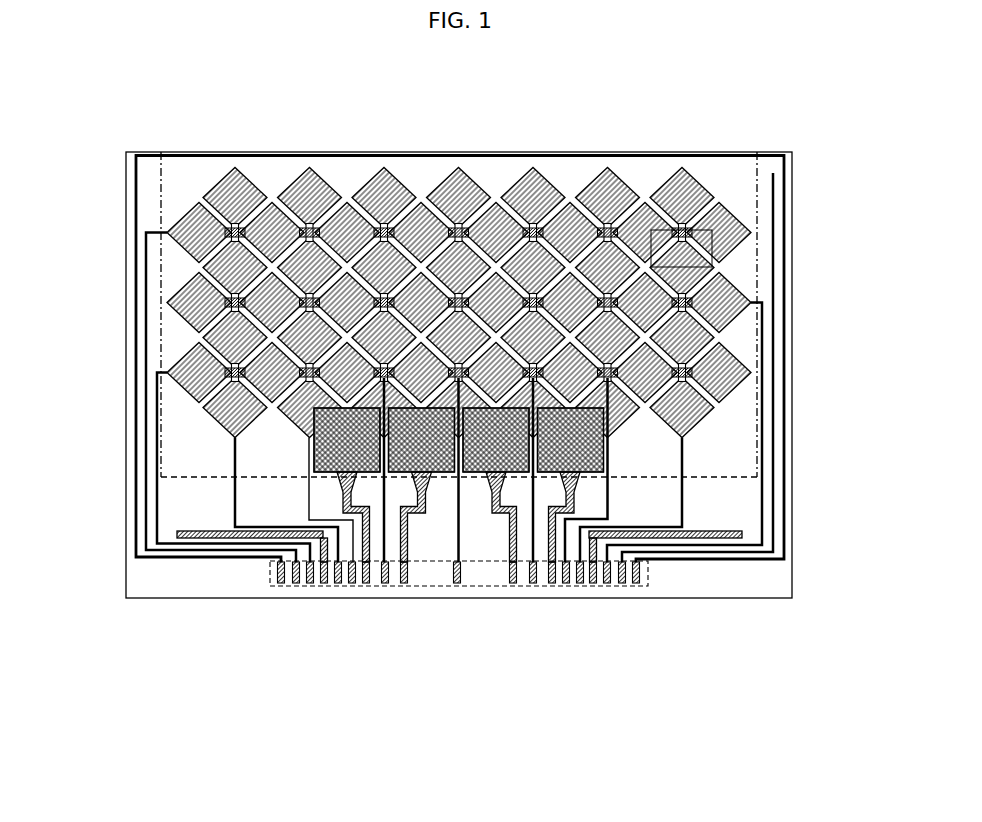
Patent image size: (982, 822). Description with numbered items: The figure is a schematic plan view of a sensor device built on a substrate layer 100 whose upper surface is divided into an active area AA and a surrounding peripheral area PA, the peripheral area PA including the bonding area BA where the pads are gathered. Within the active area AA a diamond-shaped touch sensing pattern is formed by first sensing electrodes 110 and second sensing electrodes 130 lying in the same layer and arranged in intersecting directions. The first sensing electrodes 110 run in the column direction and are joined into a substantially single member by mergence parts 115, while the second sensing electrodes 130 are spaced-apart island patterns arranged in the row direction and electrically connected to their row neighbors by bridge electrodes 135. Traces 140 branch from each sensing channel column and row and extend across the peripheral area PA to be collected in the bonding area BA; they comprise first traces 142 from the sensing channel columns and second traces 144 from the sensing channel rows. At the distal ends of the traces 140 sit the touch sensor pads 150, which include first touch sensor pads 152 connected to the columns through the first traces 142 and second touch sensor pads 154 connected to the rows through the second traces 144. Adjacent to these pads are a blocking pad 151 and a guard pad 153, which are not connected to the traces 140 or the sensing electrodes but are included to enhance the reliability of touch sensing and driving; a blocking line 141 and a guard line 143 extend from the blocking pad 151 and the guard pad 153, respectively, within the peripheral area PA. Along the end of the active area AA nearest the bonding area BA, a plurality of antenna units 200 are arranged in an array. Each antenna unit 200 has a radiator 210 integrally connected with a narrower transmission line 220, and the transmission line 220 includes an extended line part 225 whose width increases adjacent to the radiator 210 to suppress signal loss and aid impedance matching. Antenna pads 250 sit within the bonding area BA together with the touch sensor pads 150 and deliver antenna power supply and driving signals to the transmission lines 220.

The substrate layer 100 is at (166, 575).
The first sensing electrodes 110 is at (593, 182).
The mergence part 115 is at (689, 227).
The second sensing electrodes 130 is at (728, 221).
The bridge electrode 135 is at (519, 203).
The traces 140 is at (467, 359).
The blocking line 141 is at (684, 595).
The first traces 142 is at (607, 498).
The guard line 143 is at (713, 541).
The second traces 144 is at (136, 384).
The touch sensor pads 150 is at (490, 636).
The blocking pad 151 is at (602, 586).
The first touch sensor pads 152 is at (352, 585).
The guard pad 153 is at (648, 586).
The second touch sensor pads 154 is at (310, 585).
The antenna unit 200 is at (498, 519).
The radiator 210 is at (322, 445).
The transmission line 220 is at (350, 527).
The extended line part 225 is at (338, 488).
The antenna pads 250 is at (533, 586).
The active area AA is at (157, 186).
The peripheral area PA is at (213, 480).
The bonding area BA is at (478, 598).